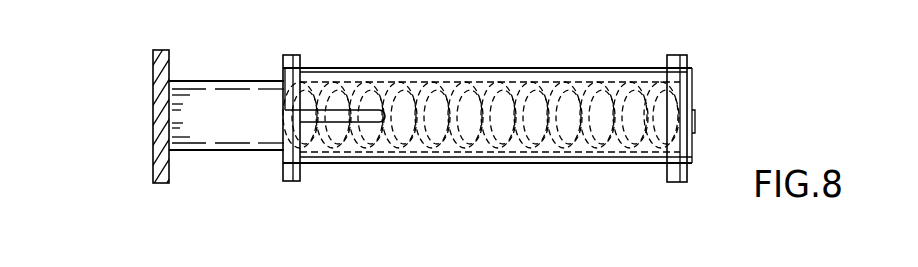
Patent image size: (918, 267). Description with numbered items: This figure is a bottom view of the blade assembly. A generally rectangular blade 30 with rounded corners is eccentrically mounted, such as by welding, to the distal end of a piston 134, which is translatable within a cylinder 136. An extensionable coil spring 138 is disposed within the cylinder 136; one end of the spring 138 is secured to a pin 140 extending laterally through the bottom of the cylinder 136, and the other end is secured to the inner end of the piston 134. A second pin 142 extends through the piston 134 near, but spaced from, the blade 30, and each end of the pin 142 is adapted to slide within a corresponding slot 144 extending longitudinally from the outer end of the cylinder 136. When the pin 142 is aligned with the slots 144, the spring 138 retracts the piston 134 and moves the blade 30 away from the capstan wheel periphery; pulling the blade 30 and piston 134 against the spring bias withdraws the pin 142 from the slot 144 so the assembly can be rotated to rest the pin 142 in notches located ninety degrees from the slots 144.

The blade 30 is at (155, 95).
The piston 134 is at (213, 150).
The cylinder 136 is at (445, 66).
The extensionable coil spring 138 is at (600, 82).
The pin 140 is at (677, 55).
The second pin 142 is at (293, 54).
The slot 144 is at (352, 127).